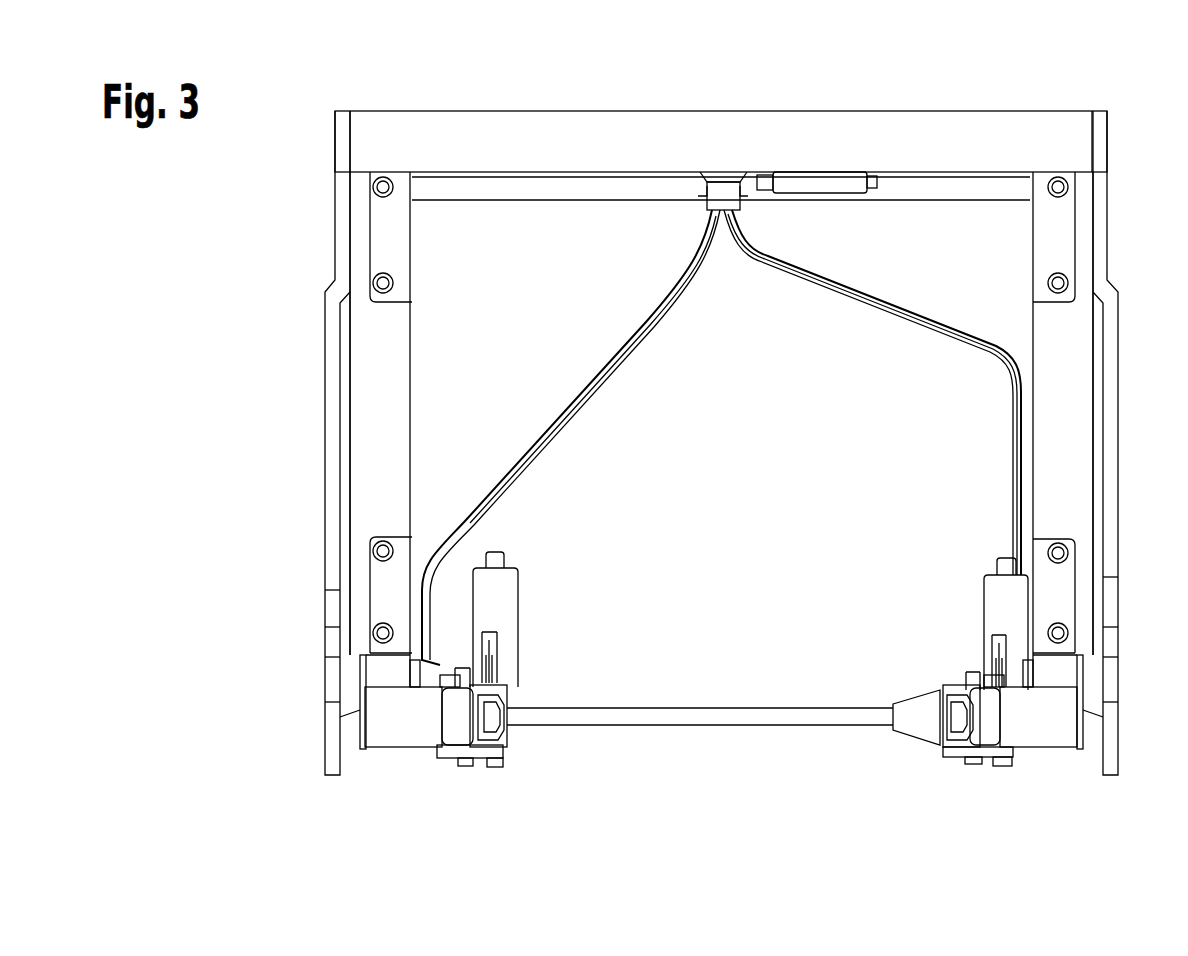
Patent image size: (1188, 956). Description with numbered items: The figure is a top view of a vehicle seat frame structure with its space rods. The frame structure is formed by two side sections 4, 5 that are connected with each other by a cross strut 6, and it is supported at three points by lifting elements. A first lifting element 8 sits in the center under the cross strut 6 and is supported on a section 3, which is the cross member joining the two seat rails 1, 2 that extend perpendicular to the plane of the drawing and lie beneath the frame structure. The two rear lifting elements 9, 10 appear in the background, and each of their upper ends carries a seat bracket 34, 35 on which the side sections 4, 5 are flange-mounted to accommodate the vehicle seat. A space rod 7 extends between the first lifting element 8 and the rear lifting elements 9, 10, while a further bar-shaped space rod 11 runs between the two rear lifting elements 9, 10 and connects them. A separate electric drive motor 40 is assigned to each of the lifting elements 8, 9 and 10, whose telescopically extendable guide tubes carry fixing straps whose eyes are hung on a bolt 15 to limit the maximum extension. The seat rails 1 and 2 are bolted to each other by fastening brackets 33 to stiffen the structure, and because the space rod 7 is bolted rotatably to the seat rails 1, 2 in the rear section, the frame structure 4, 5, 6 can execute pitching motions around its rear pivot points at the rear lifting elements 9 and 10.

The seat rail 1 is at (393, 444).
The seat rail 2 is at (1052, 342).
The section 3 is at (558, 190).
The side section 4 is at (322, 377).
The side section 5 is at (1113, 290).
The cross strut 6 is at (648, 124).
The space rod 7 is at (640, 348).
The lifting element 8 is at (752, 90).
The lifting element 9 is at (985, 778).
The lifting element 10 is at (434, 775).
The space rod 11 is at (768, 708).
The bolt 15 is at (470, 768).
The fastening bracket 33 is at (398, 252).
The seat bracket 34 is at (1048, 735).
The seat bracket 35 is at (392, 735).
The electric drive motor 40 is at (840, 195).